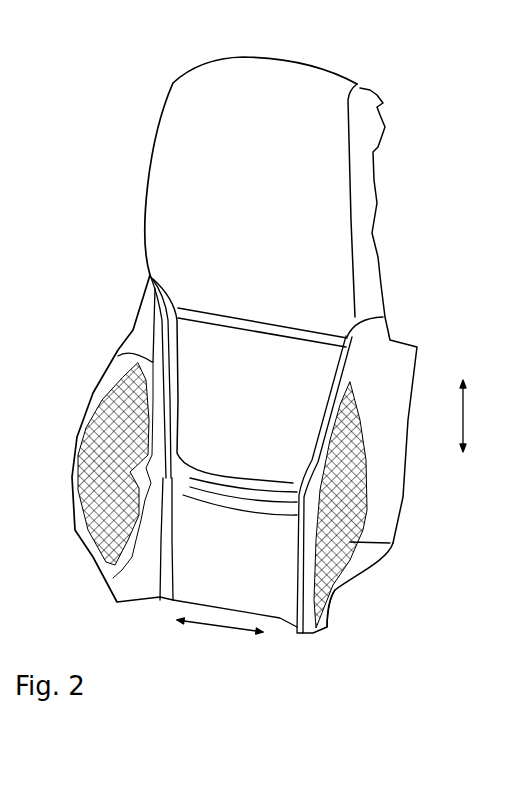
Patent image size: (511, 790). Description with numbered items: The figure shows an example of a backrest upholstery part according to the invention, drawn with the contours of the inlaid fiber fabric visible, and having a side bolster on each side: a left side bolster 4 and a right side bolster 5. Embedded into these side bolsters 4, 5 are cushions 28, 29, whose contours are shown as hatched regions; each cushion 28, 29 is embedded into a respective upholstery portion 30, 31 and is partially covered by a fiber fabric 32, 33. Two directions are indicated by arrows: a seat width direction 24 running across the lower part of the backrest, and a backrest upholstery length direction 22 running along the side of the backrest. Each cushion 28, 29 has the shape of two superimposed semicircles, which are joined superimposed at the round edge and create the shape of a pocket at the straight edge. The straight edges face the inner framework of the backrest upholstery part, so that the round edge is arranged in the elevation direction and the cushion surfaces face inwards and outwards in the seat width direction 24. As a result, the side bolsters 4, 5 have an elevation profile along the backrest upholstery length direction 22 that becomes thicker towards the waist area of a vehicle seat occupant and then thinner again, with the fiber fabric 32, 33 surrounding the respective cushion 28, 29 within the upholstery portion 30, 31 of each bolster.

The side bolster 4 is at (120, 368).
The side bolster 5 is at (390, 495).
The backrest upholstery length direction 22 is at (473, 416).
The seat width direction 24 is at (220, 632).
The cushion 28 is at (82, 483).
The cushion 29 is at (390, 543).
The upholstery portion 30 is at (72, 462).
The upholstery portion 31 is at (360, 480).
The fiber fabric 32 is at (117, 557).
The fiber fabric 33 is at (333, 585).